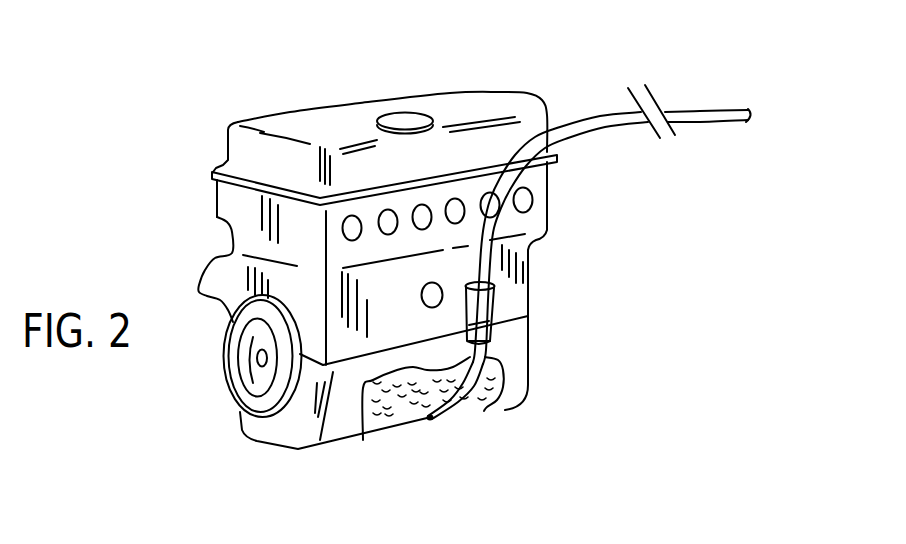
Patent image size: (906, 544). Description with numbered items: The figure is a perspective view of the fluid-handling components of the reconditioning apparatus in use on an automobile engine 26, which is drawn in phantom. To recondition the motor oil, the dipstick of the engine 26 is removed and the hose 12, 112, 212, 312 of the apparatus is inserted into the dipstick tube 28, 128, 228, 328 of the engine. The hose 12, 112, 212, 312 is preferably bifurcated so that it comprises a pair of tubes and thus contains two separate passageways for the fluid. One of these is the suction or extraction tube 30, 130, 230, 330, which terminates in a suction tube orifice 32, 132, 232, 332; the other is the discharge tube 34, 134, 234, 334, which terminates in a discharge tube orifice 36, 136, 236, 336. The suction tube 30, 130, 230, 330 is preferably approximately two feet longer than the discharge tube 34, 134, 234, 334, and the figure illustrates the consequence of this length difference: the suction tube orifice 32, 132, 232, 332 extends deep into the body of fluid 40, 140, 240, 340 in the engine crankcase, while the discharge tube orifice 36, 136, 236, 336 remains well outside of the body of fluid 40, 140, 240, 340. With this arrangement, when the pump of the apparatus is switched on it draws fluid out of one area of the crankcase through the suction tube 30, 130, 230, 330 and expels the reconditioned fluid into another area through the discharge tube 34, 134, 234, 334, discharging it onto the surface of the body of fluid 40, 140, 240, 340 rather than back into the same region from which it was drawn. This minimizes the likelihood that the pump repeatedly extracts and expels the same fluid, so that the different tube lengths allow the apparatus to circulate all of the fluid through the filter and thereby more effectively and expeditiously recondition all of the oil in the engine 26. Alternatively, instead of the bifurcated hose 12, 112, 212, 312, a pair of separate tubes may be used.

The hose 12 is at (480, 182).
The hose 112 is at (480, 182).
The hose 212 is at (480, 182).
The hose 312 is at (580, 118).
The engine 26 is at (208, 113).
The dipstick tube 28 is at (659, 284).
The dipstick tube 128 is at (659, 284).
The dipstick tube 228 is at (659, 284).
The dipstick tube 328 is at (493, 302).
The suction tube 30 is at (632, 400).
The suction tube 130 is at (632, 400).
The suction tube 230 is at (632, 400).
The suction tube 330 is at (427, 418).
The suction tube orifice 32 is at (490, 406).
The suction tube orifice 132 is at (490, 406).
The suction tube orifice 232 is at (490, 406).
The suction tube orifice 332 is at (420, 424).
The discharge tube 34 is at (659, 303).
The discharge tube 134 is at (659, 303).
The discharge tube 234 is at (659, 303).
The discharge tube 334 is at (477, 326).
The discharge tube orifice 36 is at (653, 340).
The discharge tube orifice 136 is at (653, 340).
The discharge tube orifice 236 is at (653, 340).
The discharge tube orifice 336 is at (486, 346).
The body of fluid 40 is at (338, 445).
The body of fluid 140 is at (338, 445).
The body of fluid 240 is at (338, 445).
The body of fluid 340 is at (395, 420).